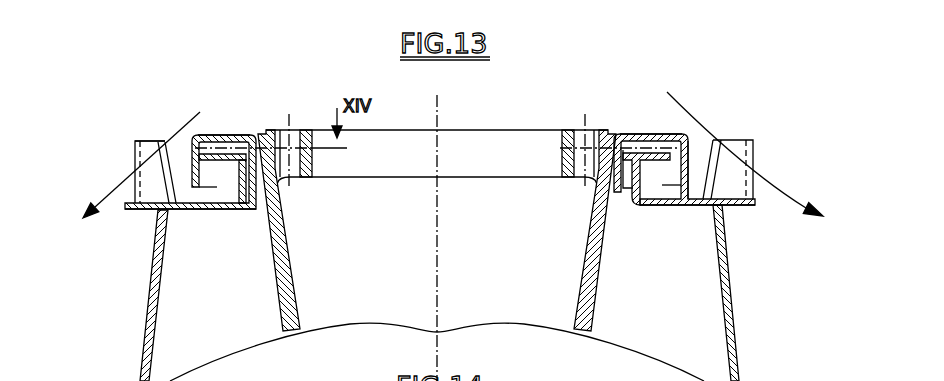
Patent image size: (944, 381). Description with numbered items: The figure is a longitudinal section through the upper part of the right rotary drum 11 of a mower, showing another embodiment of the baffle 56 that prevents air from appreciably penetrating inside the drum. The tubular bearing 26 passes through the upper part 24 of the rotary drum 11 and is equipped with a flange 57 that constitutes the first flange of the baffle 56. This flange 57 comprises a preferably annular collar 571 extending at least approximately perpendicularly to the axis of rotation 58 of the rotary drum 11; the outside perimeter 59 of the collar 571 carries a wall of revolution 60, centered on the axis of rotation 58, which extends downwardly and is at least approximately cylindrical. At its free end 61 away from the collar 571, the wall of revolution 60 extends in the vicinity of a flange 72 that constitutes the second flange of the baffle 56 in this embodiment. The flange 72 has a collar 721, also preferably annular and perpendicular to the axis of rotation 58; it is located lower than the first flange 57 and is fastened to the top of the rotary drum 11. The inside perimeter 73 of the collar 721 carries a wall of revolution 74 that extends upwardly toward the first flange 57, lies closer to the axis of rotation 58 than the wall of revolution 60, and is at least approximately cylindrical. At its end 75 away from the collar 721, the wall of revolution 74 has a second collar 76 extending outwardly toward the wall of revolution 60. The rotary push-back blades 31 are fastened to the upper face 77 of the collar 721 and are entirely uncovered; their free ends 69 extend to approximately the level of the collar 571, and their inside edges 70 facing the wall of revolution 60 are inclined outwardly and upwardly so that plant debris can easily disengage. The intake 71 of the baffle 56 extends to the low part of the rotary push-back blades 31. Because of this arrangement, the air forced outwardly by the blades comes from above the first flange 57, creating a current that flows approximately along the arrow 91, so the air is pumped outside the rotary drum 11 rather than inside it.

The rotary drum 11 is at (141, 357).
The upper part of the rotary drum 24 is at (664, 129).
The tubular bearing 26 is at (285, 292).
The rotary push-back blades 31 is at (134, 168).
The baffle 56 is at (172, 140).
The flange 57 is at (219, 122).
The axis of rotation 58 is at (436, 216).
The outside perimeter 59 is at (677, 160).
The wall of revolution 60 is at (690, 197).
The free end 61 is at (688, 206).
The free ends 69 is at (134, 141).
The inside edges 70 is at (174, 161).
The intake 71 is at (715, 142).
The flange 72 is at (202, 223).
The inside perimeter 73 is at (650, 206).
The wall of revolution 74 is at (622, 184).
The end 75 is at (244, 159).
The second collar 76 is at (220, 157).
The upper face 77 is at (128, 210).
The arrow 91 is at (108, 197).
The collar 571 is at (632, 137).
The collar 721 is at (733, 207).